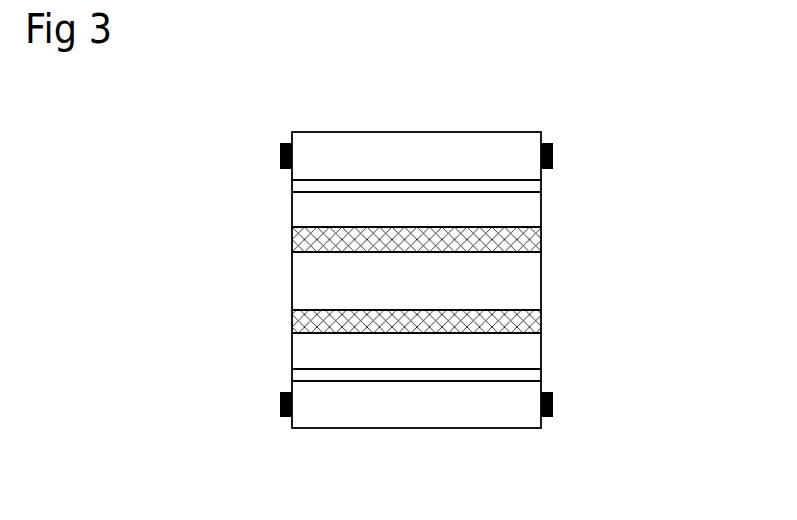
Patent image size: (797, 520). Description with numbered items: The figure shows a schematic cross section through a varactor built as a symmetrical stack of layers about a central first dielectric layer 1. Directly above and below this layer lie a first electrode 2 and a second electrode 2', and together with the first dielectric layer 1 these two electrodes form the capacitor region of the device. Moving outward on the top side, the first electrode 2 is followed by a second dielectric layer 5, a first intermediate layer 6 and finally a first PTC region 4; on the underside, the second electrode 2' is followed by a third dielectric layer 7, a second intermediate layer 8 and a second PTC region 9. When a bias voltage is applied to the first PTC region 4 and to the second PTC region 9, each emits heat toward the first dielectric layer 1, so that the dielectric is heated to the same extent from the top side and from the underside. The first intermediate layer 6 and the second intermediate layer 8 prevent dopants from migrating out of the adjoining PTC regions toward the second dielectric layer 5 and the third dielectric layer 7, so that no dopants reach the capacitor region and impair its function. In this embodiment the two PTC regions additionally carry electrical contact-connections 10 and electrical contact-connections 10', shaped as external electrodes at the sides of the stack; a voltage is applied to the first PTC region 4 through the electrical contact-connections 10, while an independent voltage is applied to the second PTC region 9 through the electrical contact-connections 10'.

The first dielectric layer 1 is at (517, 281).
The first electrode 2 is at (467, 243).
The second electrode 2' is at (471, 326).
The first PTC region 4 is at (506, 139).
The second dielectric layer 5 is at (517, 203).
The first intermediate layer 6 is at (530, 186).
The third dielectric layer 7 is at (520, 361).
The second intermediate layer 8 is at (520, 375).
The second PTC region 9 is at (512, 418).
The electrical contact-connections 10 is at (418, 153).
The electrical contact-connections 10' is at (421, 407).